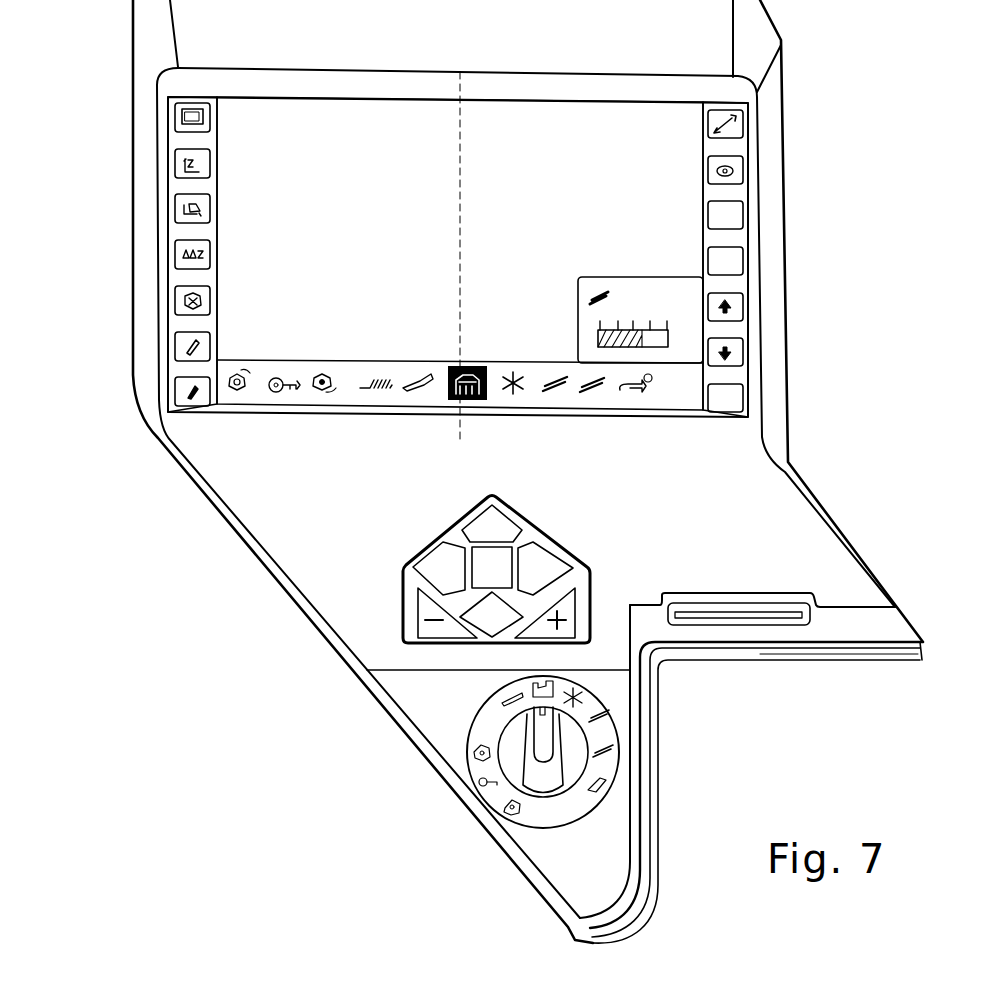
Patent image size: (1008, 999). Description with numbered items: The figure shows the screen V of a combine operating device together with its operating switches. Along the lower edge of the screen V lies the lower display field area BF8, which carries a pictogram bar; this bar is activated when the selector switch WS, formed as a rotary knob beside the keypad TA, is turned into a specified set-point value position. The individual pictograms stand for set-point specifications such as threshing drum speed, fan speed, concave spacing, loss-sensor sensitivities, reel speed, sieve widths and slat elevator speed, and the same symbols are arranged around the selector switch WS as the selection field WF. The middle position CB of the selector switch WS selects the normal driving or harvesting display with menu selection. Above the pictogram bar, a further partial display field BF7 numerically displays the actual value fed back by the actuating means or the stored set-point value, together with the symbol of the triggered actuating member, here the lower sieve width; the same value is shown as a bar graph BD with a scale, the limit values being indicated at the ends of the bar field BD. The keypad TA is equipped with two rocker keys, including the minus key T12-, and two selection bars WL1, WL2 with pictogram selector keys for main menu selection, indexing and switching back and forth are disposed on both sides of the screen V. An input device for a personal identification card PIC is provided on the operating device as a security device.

The screen V is at (647, 183).
The selection bar WL1 is at (730, 235).
The selection bar WL2 is at (180, 230).
The bar graph BD is at (642, 328).
The partial display field BF7 is at (685, 327).
The lower display field area BF8 is at (690, 373).
The keypad TA is at (465, 552).
The rocker key T12- is at (417, 620).
The middle position CB is at (513, 680).
The selection field WF is at (477, 715).
The selector switch WS is at (515, 735).
The personal identification card input device PIC is at (767, 622).